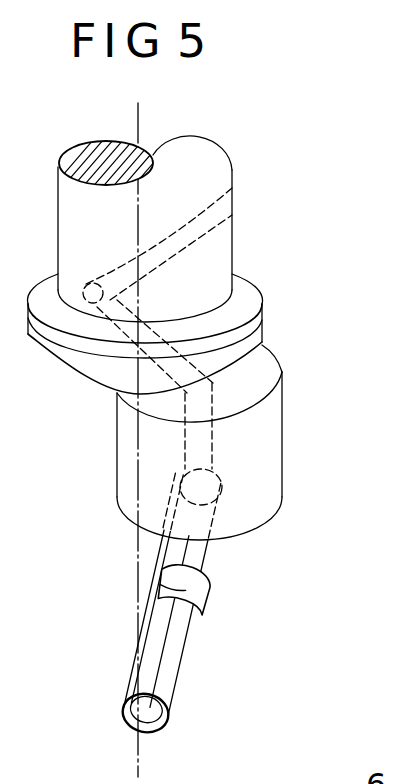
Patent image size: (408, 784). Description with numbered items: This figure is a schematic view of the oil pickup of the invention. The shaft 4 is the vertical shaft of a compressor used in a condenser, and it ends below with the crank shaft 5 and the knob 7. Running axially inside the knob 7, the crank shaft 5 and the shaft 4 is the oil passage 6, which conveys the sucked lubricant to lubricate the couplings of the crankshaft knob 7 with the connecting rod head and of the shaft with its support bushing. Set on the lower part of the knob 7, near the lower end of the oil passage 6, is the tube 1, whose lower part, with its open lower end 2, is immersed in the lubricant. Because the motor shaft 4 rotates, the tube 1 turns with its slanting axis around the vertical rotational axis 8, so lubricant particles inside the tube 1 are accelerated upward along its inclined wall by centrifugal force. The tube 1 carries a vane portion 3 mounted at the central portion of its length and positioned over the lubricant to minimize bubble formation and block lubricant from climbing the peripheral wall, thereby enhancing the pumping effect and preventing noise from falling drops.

The tube 1 is at (176, 686).
The tube open end 2 is at (125, 694).
The vane portion 3 is at (163, 580).
The shaft 4 is at (240, 183).
The crank shaft 5 is at (270, 322).
The oil passage 6 is at (215, 440).
The knob 7 is at (273, 502).
The vertical rotational axis 8 is at (137, 117).